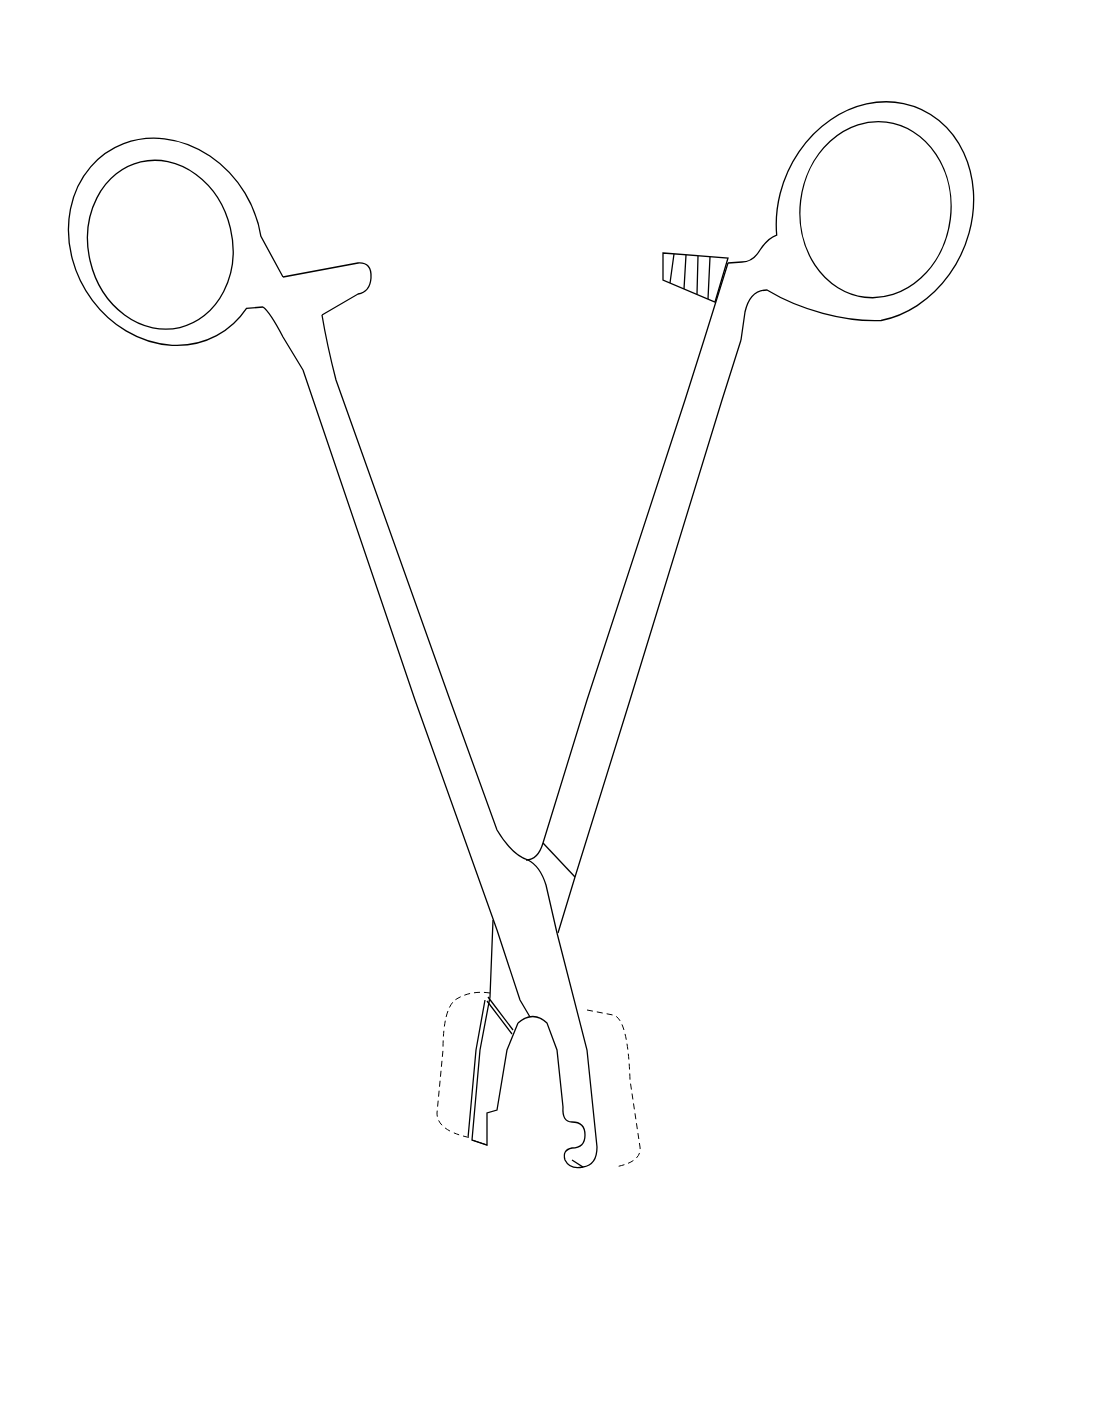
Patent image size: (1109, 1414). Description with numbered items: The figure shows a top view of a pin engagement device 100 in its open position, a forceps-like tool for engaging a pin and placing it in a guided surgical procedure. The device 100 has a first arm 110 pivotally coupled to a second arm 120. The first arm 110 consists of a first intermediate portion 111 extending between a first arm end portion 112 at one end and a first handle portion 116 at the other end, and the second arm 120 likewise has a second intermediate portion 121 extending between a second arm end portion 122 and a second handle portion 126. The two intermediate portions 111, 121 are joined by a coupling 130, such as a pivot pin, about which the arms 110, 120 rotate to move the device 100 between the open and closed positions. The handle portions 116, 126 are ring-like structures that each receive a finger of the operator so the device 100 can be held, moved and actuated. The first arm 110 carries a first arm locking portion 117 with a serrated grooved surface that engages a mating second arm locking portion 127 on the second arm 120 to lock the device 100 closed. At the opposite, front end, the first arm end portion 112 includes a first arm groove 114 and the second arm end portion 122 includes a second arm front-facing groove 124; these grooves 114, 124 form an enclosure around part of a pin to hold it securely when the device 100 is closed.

The pin engagement device 100 is at (503, 99).
The first arm 110 is at (752, 451).
The first intermediate portion 111 is at (684, 569).
The first arm end portion 112 is at (447, 1058).
The first arm groove 114 is at (491, 1130).
The first handle portion 116 is at (901, 82).
The first arm locking portion 117 is at (701, 236).
The second arm 120 is at (216, 511).
The second intermediate portion 121 is at (369, 592).
The second arm end portion 122 is at (630, 1080).
The second arm front-facing groove 124 is at (561, 1138).
The second handle portion 126 is at (136, 127).
The second arm locking portion 127 is at (337, 253).
The coupling 130 is at (522, 908).